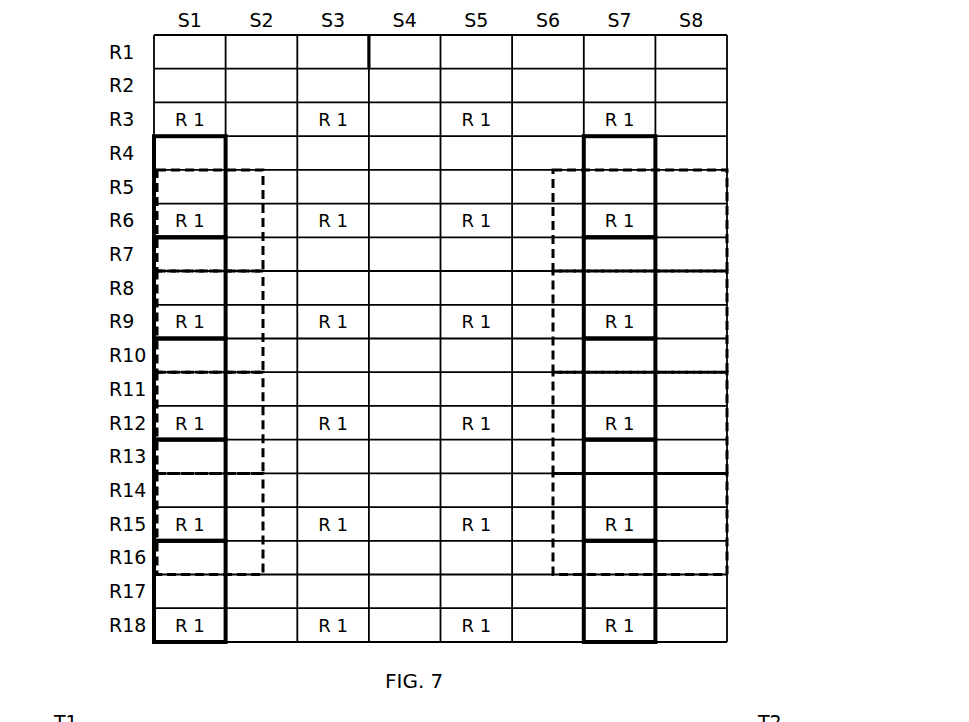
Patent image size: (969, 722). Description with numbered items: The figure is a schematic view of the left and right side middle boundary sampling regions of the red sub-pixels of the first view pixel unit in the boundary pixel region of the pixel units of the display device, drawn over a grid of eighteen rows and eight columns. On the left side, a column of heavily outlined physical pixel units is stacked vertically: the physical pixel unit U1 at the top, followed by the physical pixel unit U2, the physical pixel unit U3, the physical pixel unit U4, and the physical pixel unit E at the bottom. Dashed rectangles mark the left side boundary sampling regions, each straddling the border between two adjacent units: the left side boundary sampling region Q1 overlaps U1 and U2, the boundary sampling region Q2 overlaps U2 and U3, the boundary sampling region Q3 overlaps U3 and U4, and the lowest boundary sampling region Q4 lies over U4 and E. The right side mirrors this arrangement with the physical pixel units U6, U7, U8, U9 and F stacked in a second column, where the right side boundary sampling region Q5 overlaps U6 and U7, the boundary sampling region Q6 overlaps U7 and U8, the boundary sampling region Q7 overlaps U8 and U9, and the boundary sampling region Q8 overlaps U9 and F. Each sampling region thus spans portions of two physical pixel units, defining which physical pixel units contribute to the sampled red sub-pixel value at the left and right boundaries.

The physical pixel unit U1 is at (223, 154).
The physical pixel unit U2 is at (223, 260).
The physical pixel unit U3 is at (223, 363).
The physical pixel unit U4 is at (223, 462).
The physical pixel unit U6 is at (586, 155).
The physical pixel unit U7 is at (586, 260).
The physical pixel unit U8 is at (586, 383).
The physical pixel unit U9 is at (586, 490).
The left side boundary sampling region Q1 is at (263, 223).
The boundary sampling region Q2 is at (263, 333).
The boundary sampling region Q3 is at (263, 415).
The boundary sampling region Q4 is at (263, 527).
The right side boundary sampling region Q5 is at (555, 215).
The boundary sampling region Q6 is at (555, 333).
The boundary sampling region Q7 is at (555, 437).
The boundary sampling region Q8 is at (555, 527).
The physical pixel unit E is at (223, 595).
The physical pixel unit F is at (586, 593).